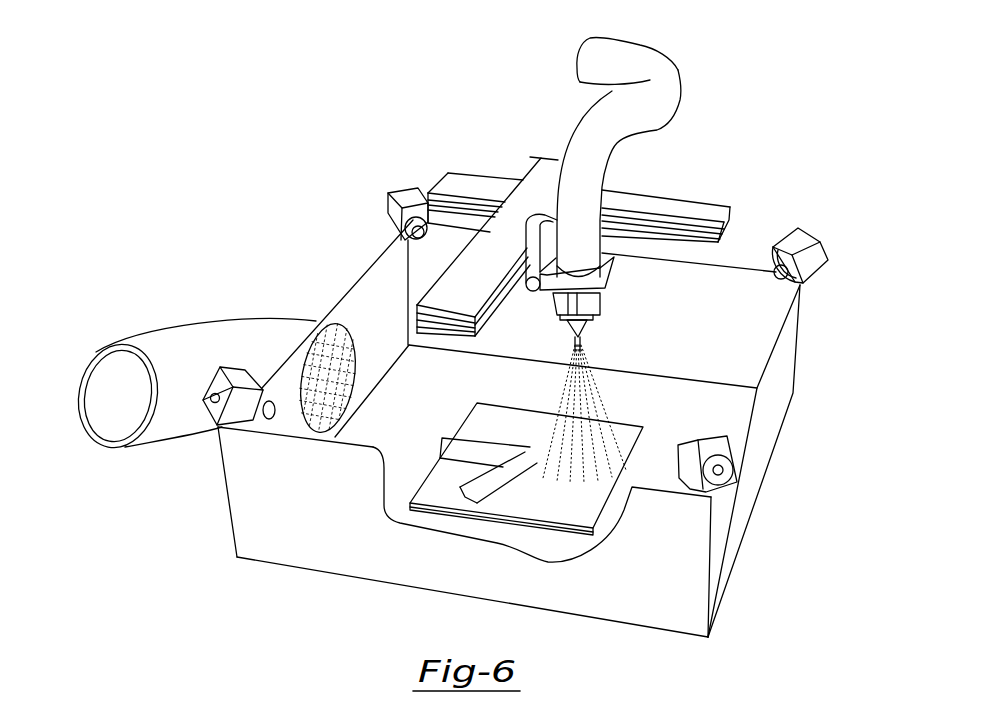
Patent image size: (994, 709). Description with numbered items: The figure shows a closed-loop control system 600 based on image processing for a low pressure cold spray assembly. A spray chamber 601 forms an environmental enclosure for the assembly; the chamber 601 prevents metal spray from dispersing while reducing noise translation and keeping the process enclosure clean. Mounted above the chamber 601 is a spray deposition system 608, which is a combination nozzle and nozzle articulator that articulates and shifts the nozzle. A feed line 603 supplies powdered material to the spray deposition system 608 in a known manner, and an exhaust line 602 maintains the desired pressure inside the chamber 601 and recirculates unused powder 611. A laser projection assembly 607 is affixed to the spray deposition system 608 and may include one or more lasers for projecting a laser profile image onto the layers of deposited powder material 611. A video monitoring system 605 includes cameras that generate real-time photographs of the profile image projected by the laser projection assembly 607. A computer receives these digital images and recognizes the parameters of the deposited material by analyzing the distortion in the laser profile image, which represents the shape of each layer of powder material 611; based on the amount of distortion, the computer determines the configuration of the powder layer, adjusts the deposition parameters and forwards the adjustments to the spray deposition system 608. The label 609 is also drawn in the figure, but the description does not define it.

The closed-loop control system 600 is at (164, 161).
The spray chamber 601 is at (381, 295).
The exhaust line 602 is at (173, 317).
The feed line 603 is at (672, 62).
The video monitoring system 605 is at (799, 212).
The laser projection assembly 607 is at (603, 305).
The spray deposition system 608 is at (640, 312).
The nozzle tip 609 is at (552, 313).
The powder material 611 is at (572, 460).